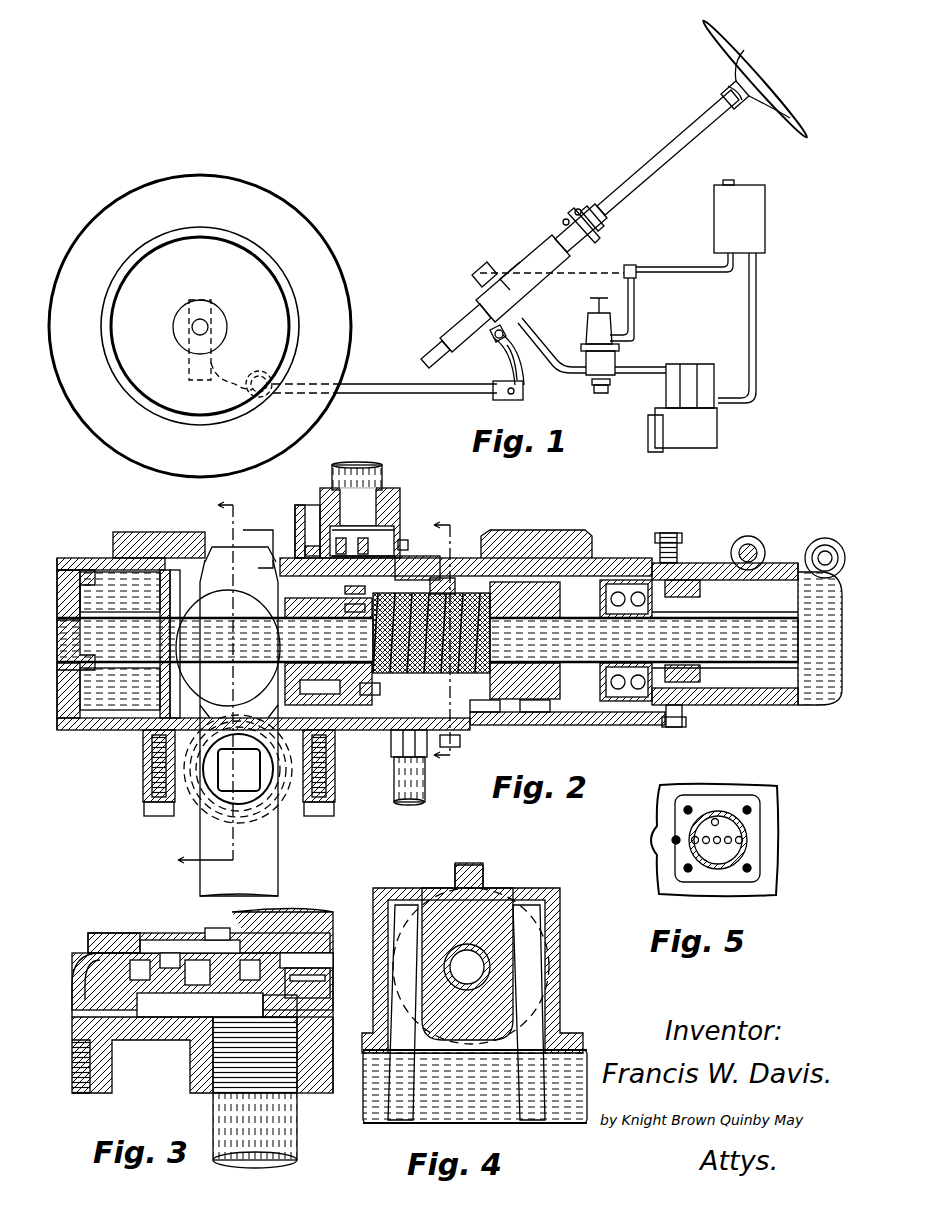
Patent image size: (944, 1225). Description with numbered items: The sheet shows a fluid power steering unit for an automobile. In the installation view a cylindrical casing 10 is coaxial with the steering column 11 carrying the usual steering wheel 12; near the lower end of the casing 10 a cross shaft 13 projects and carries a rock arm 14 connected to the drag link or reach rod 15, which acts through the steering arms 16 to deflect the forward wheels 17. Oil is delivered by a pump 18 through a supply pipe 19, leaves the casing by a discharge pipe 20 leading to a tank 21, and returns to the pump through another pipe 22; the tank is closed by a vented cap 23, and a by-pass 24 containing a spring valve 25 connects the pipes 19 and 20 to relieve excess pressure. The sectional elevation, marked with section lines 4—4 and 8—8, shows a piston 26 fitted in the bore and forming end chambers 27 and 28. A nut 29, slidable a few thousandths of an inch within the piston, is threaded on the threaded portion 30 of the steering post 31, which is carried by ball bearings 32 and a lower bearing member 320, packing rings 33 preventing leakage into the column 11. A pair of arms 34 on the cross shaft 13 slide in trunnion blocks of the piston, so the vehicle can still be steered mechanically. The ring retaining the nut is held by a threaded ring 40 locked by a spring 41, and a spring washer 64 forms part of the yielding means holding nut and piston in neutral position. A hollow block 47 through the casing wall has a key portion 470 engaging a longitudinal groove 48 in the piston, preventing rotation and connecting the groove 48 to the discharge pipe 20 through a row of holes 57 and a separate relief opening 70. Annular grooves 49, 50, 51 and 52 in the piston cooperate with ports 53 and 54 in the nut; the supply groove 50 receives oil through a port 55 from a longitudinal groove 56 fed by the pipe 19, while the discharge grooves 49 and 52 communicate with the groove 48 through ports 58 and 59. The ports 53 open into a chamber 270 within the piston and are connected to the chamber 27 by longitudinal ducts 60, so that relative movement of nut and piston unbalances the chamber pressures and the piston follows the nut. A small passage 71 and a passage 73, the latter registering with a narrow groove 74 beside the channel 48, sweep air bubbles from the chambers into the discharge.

In FIG. 1, the cylindrical casing 10 is at (510, 276).
In FIG. 2, the cylindrical casing 10 is at (481, 558).
In FIG. 3, the cylindrical casing 10 is at (140, 1030).
In FIG. 4, the cylindrical casing 10 is at (558, 916).
In FIG. 5, the cylindrical casing 10 is at (660, 856).
In FIG. 1, the steering column 11 is at (652, 171).
In FIG. 1, the steering wheel 12 is at (717, 36).
In FIG. 2, the steering wheel 12 is at (310, 540).
In FIG. 1, the cross shaft 13 is at (507, 337).
In FIG. 2, the cross shaft 13 is at (238, 769).
In FIG. 4, the cross shaft 13 is at (475, 1086).
In FIG. 1, the rock arm 14 is at (519, 371).
In FIG. 2, the rock arm 14 is at (273, 860).
In FIG. 1, the drag link or reach rod 15 is at (378, 384).
In FIG. 2, the drag link or reach rod 15 is at (418, 546).
In FIG. 1, the steering arms 16 is at (230, 371).
In FIG. 1, the forward wheels 17 is at (301, 244).
In FIG. 1, the pump 18 is at (710, 379).
In FIG. 1, the supply pipe 19 is at (559, 351).
In FIG. 2, the supply pipe 19 is at (412, 800).
In FIG. 3, the supply pipe 19 is at (250, 1140).
In FIG. 1, the discharge pipe 20 is at (486, 269).
In FIG. 2, the discharge pipe 20 is at (358, 467).
In FIG. 5, the discharge pipe 20 is at (747, 852).
In FIG. 1, the reservoir or tank 21 is at (721, 223).
In FIG. 1, the pipe 22 is at (752, 343).
In FIG. 1, the cap 23 is at (730, 180).
In FIG. 1, the by-pass 24 is at (636, 308).
In FIG. 1, the spring valve 25 is at (599, 327).
In FIG. 2, the piston 26 is at (485, 725).
In FIG. 3, the piston 26 is at (88, 958).
In FIG. 4, the piston 26 is at (437, 905).
In FIG. 2, the chamber 27 is at (574, 557).
In FIG. 2, the chamber 28 is at (107, 585).
In FIG. 3, the nut 29 is at (103, 945).
In FIG. 2, the threaded portion 30 is at (492, 645).
In FIG. 2, the steering post 31 is at (693, 558).
In FIG. 4, the steering post 31 is at (467, 967).
In FIG. 2, the ball bearings 32 is at (625, 735).
In FIG. 2, the packing rings 33 is at (690, 688).
In FIG. 2, the arms 34 is at (218, 680).
In FIG. 4, the arms 34 is at (405, 942).
In FIG. 2, the threaded ring 40 is at (535, 722).
In FIG. 2, the spring 41 is at (525, 690).
In FIG. 2, the block 47 is at (397, 507).
In FIG. 5, the block 47 is at (755, 822).
In FIG. 2, the longitudinal groove 48 is at (400, 565).
In FIG. 4, the longitudinal groove 48 is at (481, 888).
In FIG. 3, the annular groove 49 is at (280, 1007).
In FIG. 2, the annular groove 50 is at (328, 651).
In FIG. 3, the annular groove 50 is at (197, 970).
In FIG. 2, the annular groove 51 is at (315, 552).
In FIG. 3, the annular groove 51 is at (170, 962).
In FIG. 3, the annular groove 52 is at (140, 975).
In FIG. 2, the ports 53 is at (373, 696).
In FIG. 3, the ports 53 is at (218, 928).
In FIG. 3, the ports 54 is at (153, 945).
In FIG. 2, the port 55 is at (172, 598).
In FIG. 3, the port 55 is at (245, 970).
In FIG. 2, the longitudinal groove 56 is at (452, 760).
In FIG. 2, the holes 57 is at (363, 540).
In FIG. 5, the holes 57 is at (733, 852).
In FIG. 2, the port 58 is at (440, 578).
In FIG. 2, the port 59 is at (340, 608).
In FIG. 3, the longitudinal ducts 60 is at (312, 942).
In FIG. 3, the spring washer 64 is at (290, 970).
In FIG. 5, the discharge opening 70 is at (715, 818).
In FIG. 2, the passage 71 is at (521, 552).
In FIG. 2, the passage 73 is at (140, 543).
In FIG. 2, the narrow groove 74 is at (246, 545).
In FIG. 2, the chamber 270 is at (270, 702).
In FIG. 2, the bearing member 320 is at (75, 597).
In FIG. 2, the key portion 470 is at (340, 591).
In FIG. 2, the section line 4— 4 is at (196, 683).
In FIG. 2, the section line 8- 8 is at (435, 641).